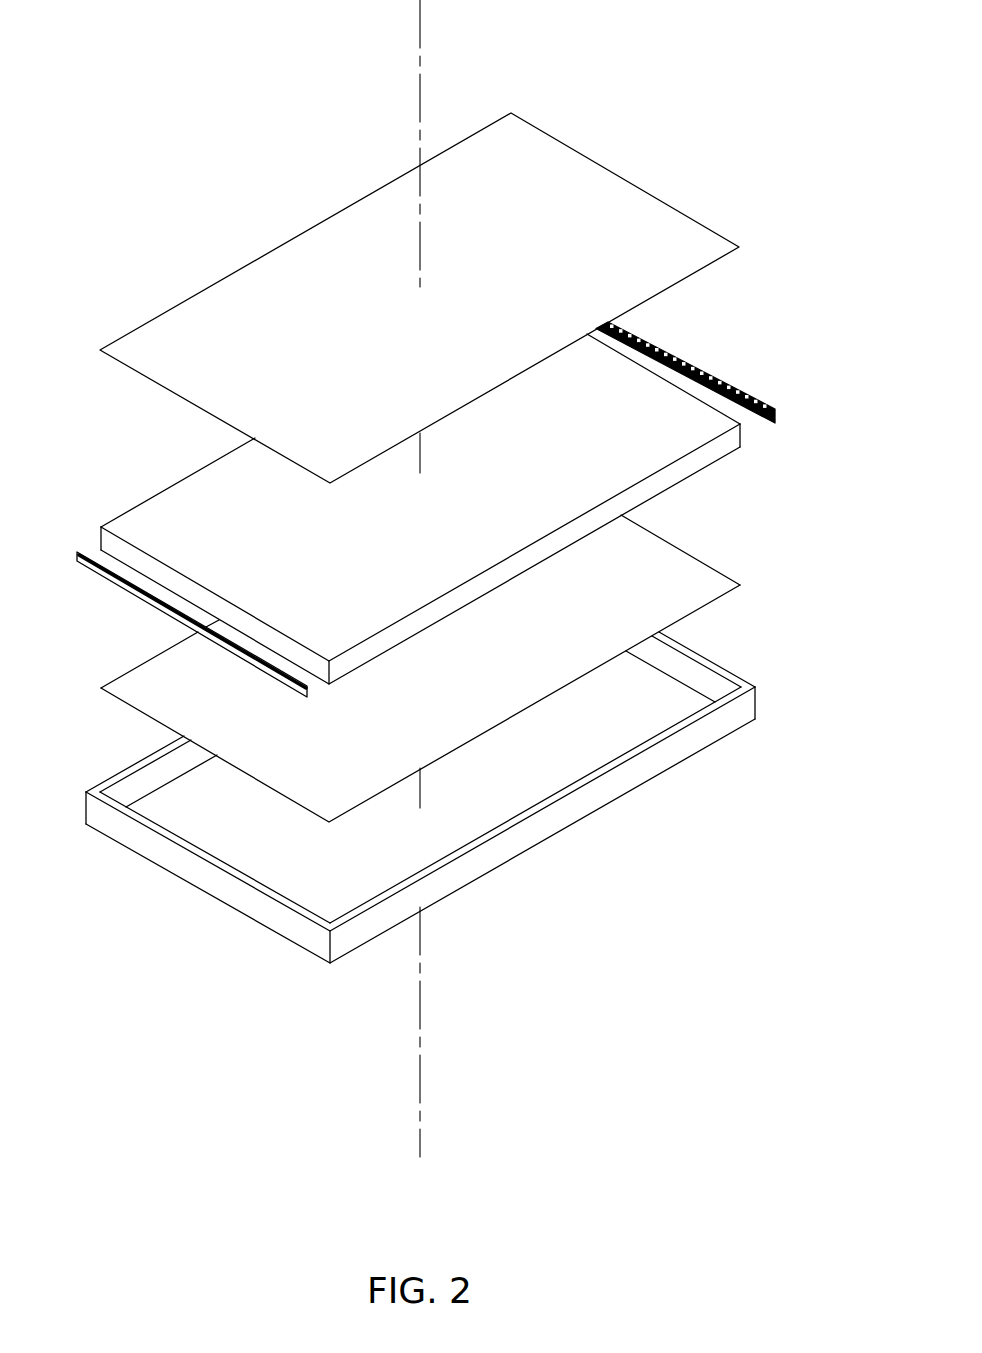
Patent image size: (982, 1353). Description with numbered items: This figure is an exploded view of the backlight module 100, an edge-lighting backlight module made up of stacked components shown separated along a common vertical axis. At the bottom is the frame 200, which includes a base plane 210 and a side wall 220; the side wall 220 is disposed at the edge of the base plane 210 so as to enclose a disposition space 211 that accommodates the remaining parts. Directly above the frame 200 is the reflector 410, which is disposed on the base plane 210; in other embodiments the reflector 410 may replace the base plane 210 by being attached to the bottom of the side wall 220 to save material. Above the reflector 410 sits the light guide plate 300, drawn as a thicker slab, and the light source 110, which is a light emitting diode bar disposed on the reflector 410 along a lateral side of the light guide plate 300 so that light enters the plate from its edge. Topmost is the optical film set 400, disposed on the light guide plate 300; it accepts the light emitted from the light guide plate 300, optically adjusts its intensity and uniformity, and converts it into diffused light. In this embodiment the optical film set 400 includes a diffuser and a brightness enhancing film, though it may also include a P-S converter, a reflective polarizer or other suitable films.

The backlight module 100 is at (173, 96).
The light source 110 is at (775, 410).
The frame 200 is at (446, 797).
The base plane 210 is at (482, 793).
The disposition space 211 is at (223, 832).
The side wall 220 is at (735, 717).
The light guide plate 300 is at (710, 450).
The optical film set 400 is at (127, 335).
The reflector 410 is at (715, 579).